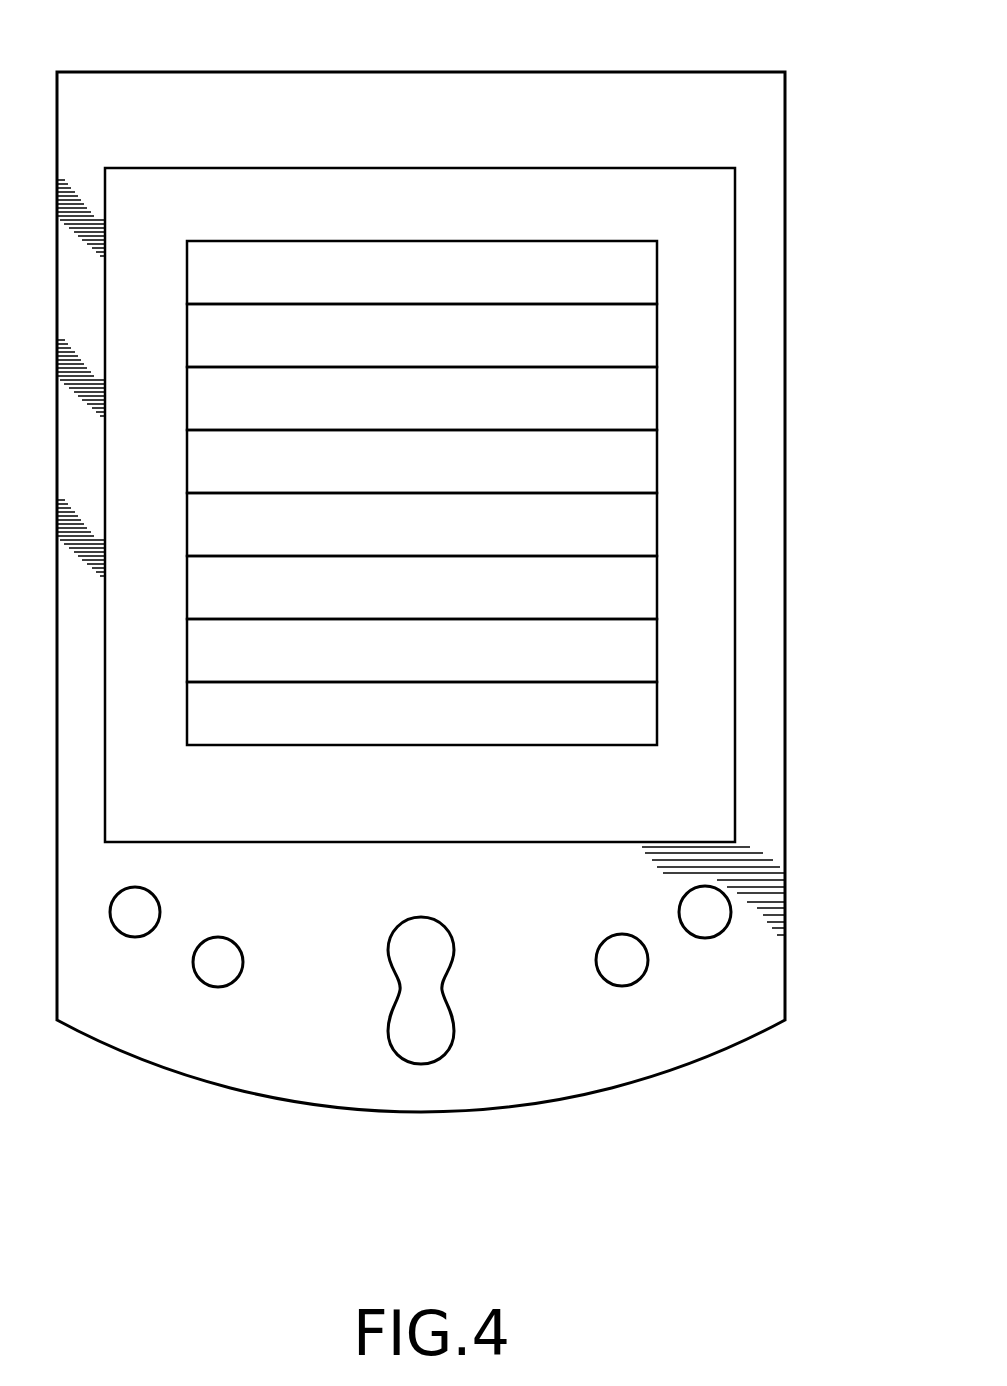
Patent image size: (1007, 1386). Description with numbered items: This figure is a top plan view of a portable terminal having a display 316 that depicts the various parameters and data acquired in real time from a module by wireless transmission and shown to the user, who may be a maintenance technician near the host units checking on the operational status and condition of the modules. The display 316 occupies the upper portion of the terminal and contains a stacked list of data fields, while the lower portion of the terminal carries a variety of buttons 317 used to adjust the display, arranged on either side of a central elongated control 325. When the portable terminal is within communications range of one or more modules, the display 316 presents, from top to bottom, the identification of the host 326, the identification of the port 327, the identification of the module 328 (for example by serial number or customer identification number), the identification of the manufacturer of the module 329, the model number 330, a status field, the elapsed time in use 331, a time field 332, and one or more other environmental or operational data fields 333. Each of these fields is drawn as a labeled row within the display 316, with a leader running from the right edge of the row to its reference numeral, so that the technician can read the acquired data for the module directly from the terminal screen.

The display 316 is at (283, 200).
The buttons 317 is at (130, 936).
The scroll button 325 is at (390, 1040).
The identification of the host 326 is at (657, 270).
The identification of the port 327 is at (657, 333).
The identification of the module 328 is at (657, 396).
The identification of the manufacturer of the module 329 is at (657, 459).
The model number 330 is at (657, 522).
The elapsed time in use 331 is at (657, 585).
The time field 332 is at (657, 648).
The environmental or operational data fields 333 is at (657, 711).